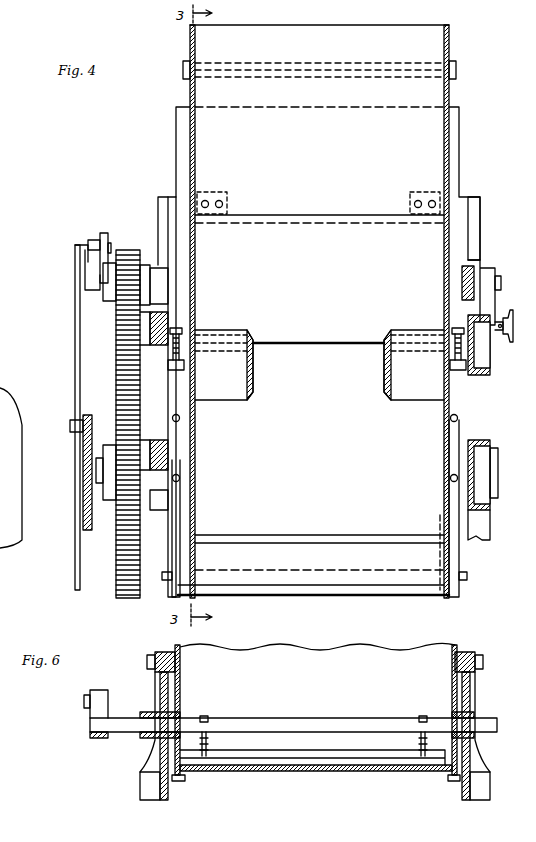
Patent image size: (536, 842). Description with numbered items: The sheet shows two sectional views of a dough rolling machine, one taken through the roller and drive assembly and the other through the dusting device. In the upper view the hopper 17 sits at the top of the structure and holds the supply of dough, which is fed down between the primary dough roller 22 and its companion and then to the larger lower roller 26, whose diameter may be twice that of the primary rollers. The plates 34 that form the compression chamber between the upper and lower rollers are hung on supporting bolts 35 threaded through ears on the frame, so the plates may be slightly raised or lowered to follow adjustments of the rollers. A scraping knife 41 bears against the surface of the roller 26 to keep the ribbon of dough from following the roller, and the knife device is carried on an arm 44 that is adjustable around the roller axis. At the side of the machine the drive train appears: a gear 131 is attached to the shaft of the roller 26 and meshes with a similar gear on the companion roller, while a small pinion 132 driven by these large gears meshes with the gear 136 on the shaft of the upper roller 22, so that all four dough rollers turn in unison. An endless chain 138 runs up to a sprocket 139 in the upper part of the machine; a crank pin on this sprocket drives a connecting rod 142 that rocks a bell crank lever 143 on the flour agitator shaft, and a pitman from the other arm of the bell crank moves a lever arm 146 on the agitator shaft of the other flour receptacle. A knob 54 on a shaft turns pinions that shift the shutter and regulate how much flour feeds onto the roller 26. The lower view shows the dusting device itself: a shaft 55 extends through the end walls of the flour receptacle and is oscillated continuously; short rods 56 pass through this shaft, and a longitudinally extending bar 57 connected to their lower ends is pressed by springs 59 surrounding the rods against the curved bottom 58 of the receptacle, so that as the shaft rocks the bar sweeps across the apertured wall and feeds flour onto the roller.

In FIG. 4, the hopper 17 is at (319, 311).
In FIG. 4, the primary dough roller 22 is at (292, 273).
In FIG. 4, the roller 26 is at (294, 469).
In FIG. 4, the plate 34 is at (262, 370).
In FIG. 4, the supporting bolt 35 is at (188, 338).
In FIG. 4, the scraping knife 41 is at (286, 536).
In FIG. 4, the arm 44 is at (449, 520).
In FIG. 4, the operating handle or knob 54 is at (506, 342).
In FIG. 4, the gear 131 is at (110, 576).
In FIG. 4, the pinion 132 is at (115, 338).
In FIG. 4, the gear 136 is at (136, 252).
In FIG. 4, the endless chain 138 is at (84, 530).
In FIG. 4, the sprocket 139 is at (81, 456).
In FIG. 4, the connecting rod 142 is at (68, 343).
In FIG. 4, the bell crank lever 143 is at (86, 242).
In FIG. 4, the lever arm 146 is at (106, 232).
In FIG. 6, the shaft 55 is at (350, 724).
In FIG. 6, the short rod 56 is at (207, 716).
In FIG. 6, the longitudinally extending bar 57 is at (280, 748).
In FIG. 6, the bottom 58 is at (368, 772).
In FIG. 6, the spring 59 is at (419, 730).